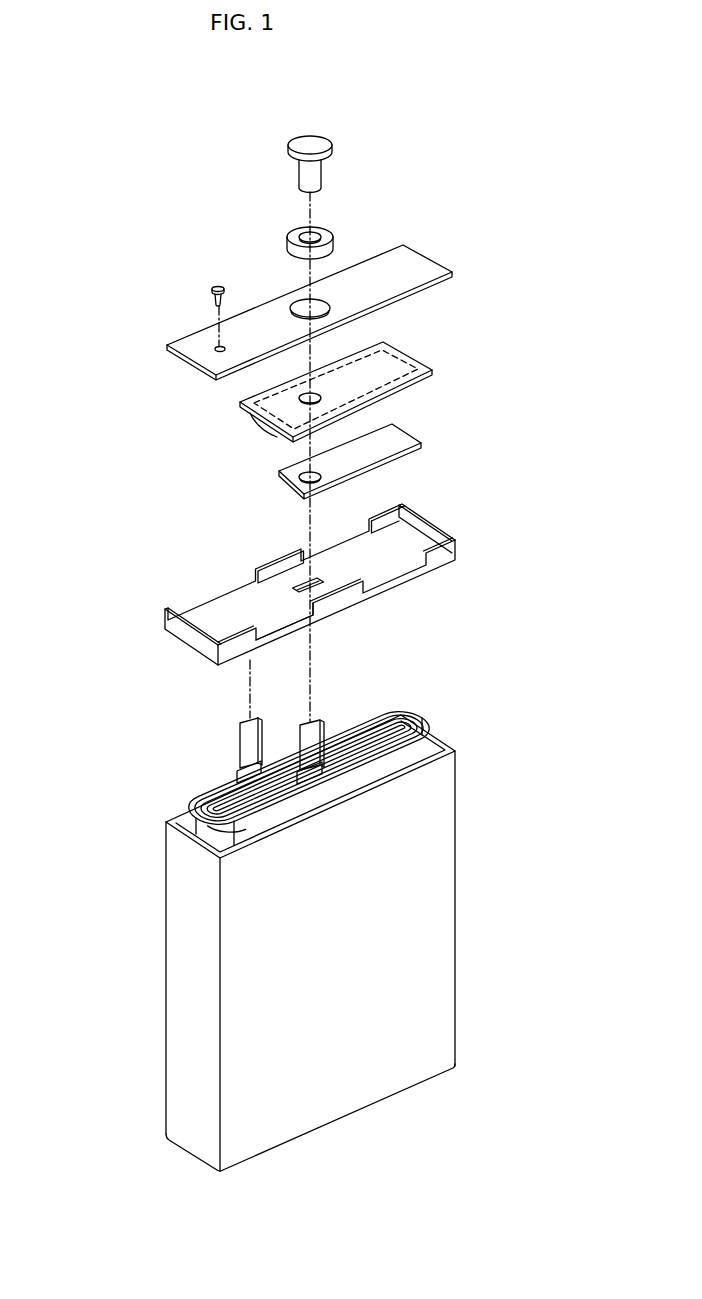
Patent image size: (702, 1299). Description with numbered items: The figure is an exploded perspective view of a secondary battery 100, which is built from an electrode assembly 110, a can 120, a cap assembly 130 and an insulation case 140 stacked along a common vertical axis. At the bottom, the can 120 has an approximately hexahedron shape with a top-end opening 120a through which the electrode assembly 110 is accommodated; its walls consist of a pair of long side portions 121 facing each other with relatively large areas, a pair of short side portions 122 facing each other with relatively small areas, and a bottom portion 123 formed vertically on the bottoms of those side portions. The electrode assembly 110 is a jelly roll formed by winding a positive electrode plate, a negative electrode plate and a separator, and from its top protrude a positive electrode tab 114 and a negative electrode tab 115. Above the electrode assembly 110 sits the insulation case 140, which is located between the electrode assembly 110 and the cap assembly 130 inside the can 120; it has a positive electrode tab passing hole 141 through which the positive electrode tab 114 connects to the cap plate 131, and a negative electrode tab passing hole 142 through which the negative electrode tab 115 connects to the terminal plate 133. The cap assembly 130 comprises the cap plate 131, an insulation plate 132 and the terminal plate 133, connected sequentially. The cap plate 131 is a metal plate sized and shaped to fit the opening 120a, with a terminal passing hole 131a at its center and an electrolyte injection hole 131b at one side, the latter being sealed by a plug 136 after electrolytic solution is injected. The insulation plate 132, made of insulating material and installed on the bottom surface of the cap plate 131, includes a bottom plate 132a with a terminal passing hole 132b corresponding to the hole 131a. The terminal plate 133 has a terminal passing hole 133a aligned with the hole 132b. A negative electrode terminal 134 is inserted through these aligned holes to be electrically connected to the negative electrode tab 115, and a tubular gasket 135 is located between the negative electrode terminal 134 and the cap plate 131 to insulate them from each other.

The secondary battery 100 is at (77, 116).
The electrode assembly 110 is at (493, 680).
The positive electrode tab 114 is at (250, 740).
The negative electrode tab 115 is at (298, 742).
The can 120 is at (462, 868).
The opening 120a is at (442, 740).
The long side portions 121 is at (443, 960).
The short side portions 122 is at (180, 1000).
The bottom portion 123 is at (340, 1117).
The cap assembly 130 is at (146, 377).
The cap plate 131 is at (420, 262).
The terminal passing hole 131a is at (296, 303).
The electrolyte injection hole 131b is at (215, 346).
The insulation plate 132 is at (417, 349).
The bottom plate 132a is at (247, 410).
The terminal passing hole 132b is at (297, 401).
The terminal plate 133 is at (400, 433).
The terminal passing hole 133a is at (297, 478).
The negative electrode terminal 134 is at (313, 143).
The gasket 135 is at (292, 233).
The plug 136 is at (215, 288).
The insulation case 140 is at (172, 623).
The positive electrode tab passing hole 141 is at (233, 598).
The negative electrode tab passing hole 142 is at (307, 584).